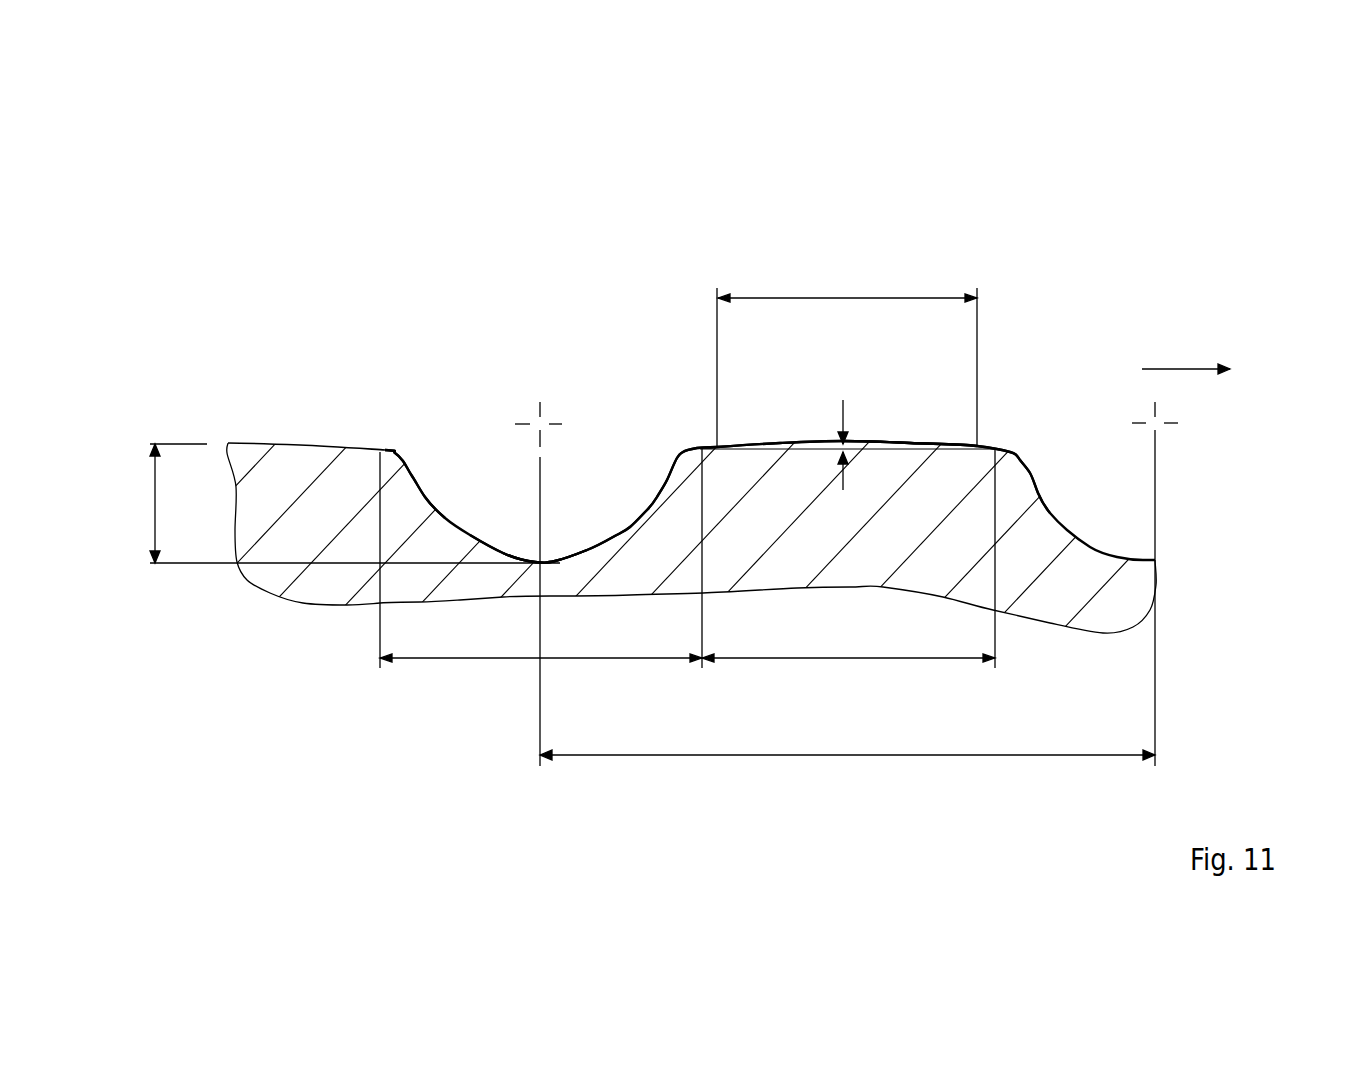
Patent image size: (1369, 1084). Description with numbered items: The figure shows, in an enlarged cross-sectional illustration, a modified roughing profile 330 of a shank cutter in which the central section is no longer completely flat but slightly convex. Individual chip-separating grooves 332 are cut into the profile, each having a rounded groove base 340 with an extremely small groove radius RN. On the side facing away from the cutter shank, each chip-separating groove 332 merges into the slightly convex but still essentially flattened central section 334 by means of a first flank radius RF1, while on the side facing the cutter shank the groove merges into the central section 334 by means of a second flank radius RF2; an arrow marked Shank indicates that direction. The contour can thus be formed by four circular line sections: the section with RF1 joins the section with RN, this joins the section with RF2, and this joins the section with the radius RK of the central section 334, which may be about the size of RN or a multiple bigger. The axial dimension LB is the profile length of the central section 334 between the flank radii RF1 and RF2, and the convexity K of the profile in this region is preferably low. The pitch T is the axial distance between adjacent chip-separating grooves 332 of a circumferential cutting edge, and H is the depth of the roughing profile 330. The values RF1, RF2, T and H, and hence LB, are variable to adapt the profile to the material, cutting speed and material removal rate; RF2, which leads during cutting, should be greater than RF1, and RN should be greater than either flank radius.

The roughing profile 330 is at (1038, 230).
The chip-separating groove 332 is at (502, 417).
The central section 334 is at (775, 440).
The groove base 340 is at (534, 558).
The first flank radius RF1 is at (402, 453).
The second flank radius RF2 is at (680, 457).
The groove radius RN is at (587, 548).
The radius of the central section RK is at (922, 443).
The axial dimension of the central section LB is at (839, 297).
The convexity K is at (848, 490).
The depth of the roughing profile H is at (153, 501).
The pitch of the roughing profile T is at (843, 758).
The cutter shank Shank is at (1238, 369).